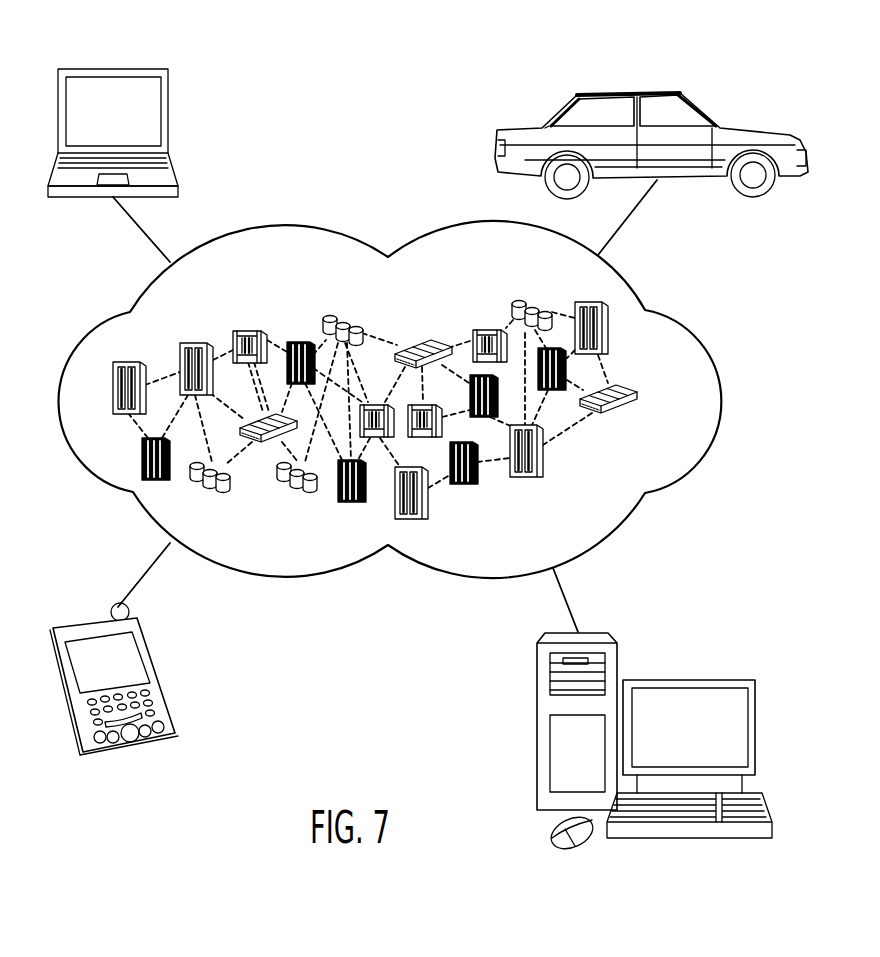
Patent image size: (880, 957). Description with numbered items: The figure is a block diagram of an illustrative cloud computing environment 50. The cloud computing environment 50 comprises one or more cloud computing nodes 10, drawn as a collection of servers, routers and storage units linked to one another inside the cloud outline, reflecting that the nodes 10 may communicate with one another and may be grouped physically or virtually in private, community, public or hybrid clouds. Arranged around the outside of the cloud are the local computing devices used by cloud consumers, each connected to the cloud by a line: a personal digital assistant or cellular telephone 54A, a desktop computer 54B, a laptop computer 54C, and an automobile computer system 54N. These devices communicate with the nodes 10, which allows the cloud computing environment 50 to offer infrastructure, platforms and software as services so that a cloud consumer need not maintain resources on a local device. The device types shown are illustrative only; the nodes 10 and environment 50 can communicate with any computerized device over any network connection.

The cloud computing node 10 is at (645, 400).
The cloud computing environment 50 is at (703, 314).
The personal digital assistant or cellular telephone 54A is at (92, 620).
The desktop computer 54B is at (688, 678).
The laptop computer 54C is at (113, 68).
The automobile computer system 54N is at (632, 94).